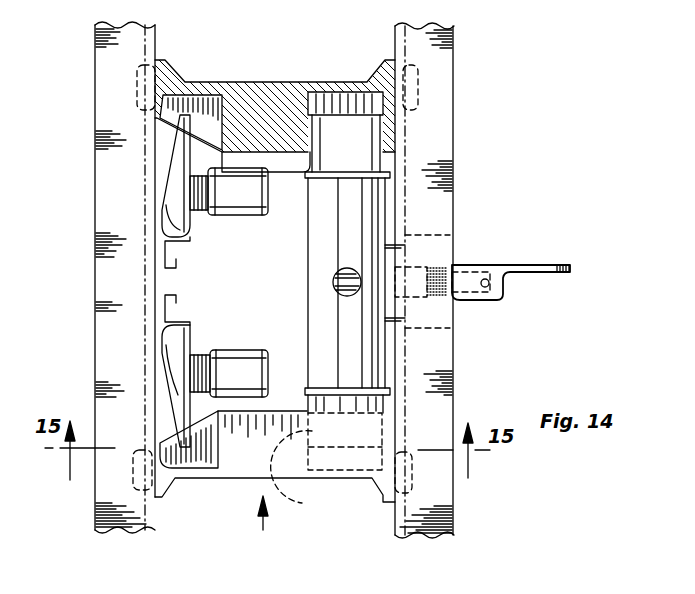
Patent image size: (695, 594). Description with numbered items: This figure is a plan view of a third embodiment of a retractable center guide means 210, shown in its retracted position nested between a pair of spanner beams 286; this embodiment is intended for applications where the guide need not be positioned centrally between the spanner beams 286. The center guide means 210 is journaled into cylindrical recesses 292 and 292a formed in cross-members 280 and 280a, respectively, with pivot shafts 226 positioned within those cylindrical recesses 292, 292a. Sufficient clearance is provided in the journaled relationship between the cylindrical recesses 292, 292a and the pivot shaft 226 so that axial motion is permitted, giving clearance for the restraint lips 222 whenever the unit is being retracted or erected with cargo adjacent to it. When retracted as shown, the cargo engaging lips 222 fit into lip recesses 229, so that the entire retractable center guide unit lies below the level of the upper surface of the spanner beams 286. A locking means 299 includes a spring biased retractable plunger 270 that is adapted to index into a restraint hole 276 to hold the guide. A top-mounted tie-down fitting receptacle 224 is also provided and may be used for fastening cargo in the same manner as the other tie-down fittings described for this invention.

The lip recess 229 is at (202, 110).
The cross-member 280 is at (236, 97).
The cylindrical recess 292 is at (305, 127).
The pivot shaft 226 is at (360, 145).
The cargo engaging lip 222 is at (170, 172).
The tie-down fitting receptacle 224 is at (167, 278).
The restraint hole 276 is at (340, 283).
The spring biased retractable plunger 270 is at (413, 277).
The locking means 299 is at (507, 267).
The spanner beam 286 is at (103, 485).
The cross-member 280a is at (257, 477).
The retractable center guide means 210 is at (263, 515).
The cylindrical recess 292a is at (295, 505).